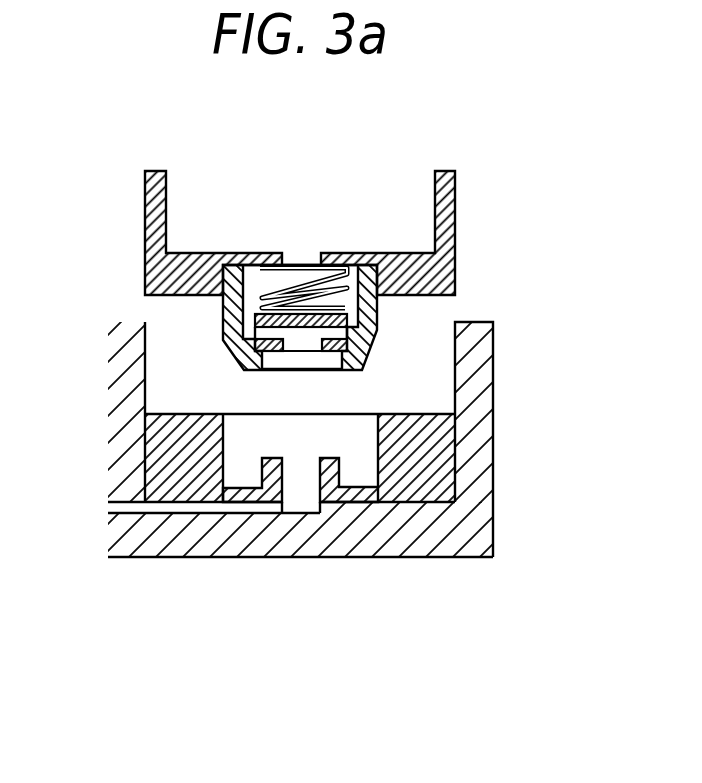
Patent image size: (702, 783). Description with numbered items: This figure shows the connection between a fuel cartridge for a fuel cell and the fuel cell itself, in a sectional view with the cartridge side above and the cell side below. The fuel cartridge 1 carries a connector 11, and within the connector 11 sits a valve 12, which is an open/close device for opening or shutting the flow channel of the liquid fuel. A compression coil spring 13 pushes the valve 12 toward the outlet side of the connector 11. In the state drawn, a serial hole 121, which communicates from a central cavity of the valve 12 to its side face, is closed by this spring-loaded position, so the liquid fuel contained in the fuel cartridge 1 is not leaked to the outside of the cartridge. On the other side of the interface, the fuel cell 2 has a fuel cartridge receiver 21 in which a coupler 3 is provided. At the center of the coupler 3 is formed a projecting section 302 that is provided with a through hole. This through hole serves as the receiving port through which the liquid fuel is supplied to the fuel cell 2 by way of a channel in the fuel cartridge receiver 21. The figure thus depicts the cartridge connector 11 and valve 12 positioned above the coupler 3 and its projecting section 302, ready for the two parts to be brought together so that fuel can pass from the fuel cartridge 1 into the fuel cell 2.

The fuel cartridge 1 is at (398, 177).
The connector 11 is at (373, 321).
The valve 12 is at (372, 352).
The serial hole 121 is at (262, 333).
The compression coil spring 13 is at (300, 262).
The fuel cell 2 is at (105, 375).
The fuel cartridge receiver 21 is at (483, 437).
The coupler 3 is at (408, 490).
The projecting section 302 is at (262, 458).